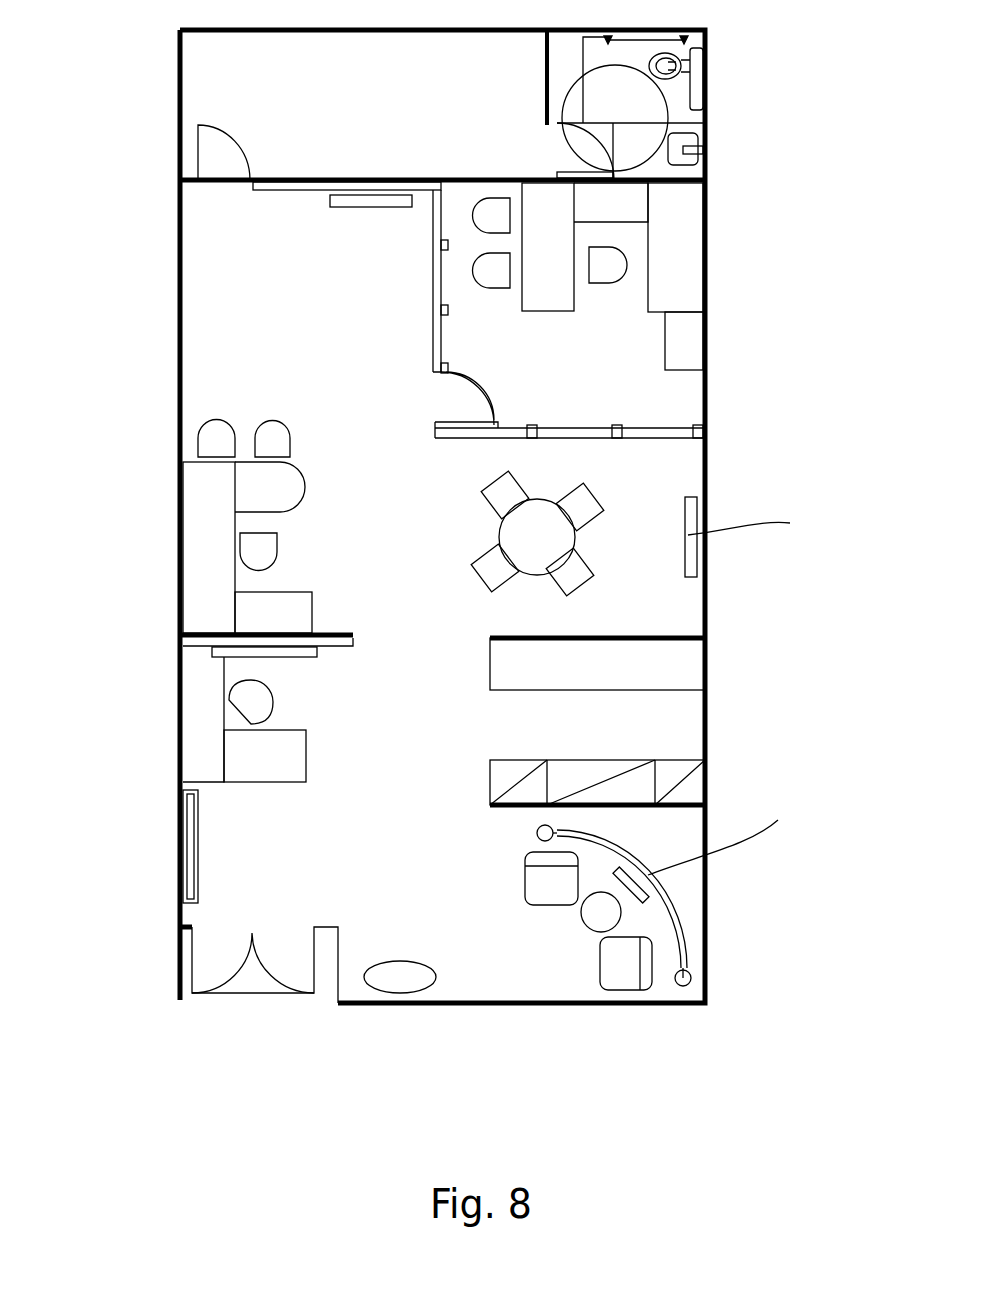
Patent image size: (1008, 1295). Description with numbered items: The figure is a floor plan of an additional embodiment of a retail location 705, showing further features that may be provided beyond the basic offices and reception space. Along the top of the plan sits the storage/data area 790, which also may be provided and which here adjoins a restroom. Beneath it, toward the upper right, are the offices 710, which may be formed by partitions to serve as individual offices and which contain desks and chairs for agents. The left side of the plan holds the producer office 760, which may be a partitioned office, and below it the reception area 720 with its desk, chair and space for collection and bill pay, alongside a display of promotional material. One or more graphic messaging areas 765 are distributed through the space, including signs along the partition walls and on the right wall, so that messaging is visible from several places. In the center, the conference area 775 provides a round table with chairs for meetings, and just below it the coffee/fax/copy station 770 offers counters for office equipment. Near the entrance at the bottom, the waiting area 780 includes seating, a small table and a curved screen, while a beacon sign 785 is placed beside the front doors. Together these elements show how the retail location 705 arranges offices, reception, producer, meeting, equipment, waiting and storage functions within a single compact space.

The retail location 705 is at (478, 1053).
The offices 710 is at (655, 388).
The reception area 720 is at (160, 745).
The producer office 760 is at (160, 578).
The graphic messaging areas 765 is at (363, 286).
The coffee/fax/copy station 770 is at (663, 723).
The conference area 775 is at (603, 588).
The waiting area 780 is at (553, 968).
The beacon sign 785 is at (362, 985).
The storage/data area 790 is at (252, 100).